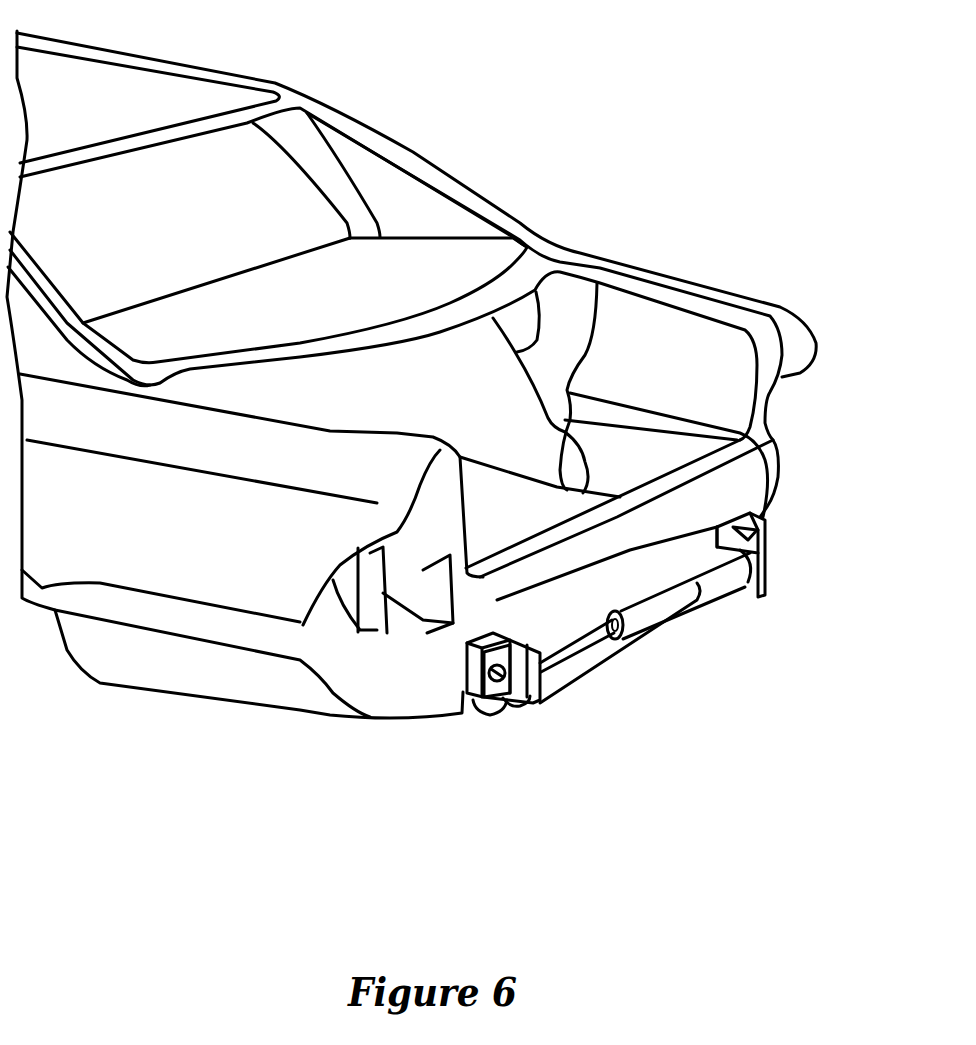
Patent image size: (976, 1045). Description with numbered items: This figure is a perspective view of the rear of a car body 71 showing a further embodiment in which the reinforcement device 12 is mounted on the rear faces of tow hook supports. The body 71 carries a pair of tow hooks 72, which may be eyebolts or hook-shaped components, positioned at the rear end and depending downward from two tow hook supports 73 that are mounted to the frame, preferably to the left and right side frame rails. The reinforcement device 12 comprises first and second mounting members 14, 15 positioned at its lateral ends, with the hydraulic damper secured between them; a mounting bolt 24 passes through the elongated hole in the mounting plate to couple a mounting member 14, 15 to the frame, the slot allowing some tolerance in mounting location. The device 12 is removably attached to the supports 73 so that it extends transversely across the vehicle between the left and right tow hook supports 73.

The reinforcement device 12 is at (653, 625).
The first mounting member 14 is at (540, 683).
The second mounting member 15 is at (770, 573).
The mounting bolt 24 is at (527, 706).
The car body 71 is at (413, 152).
The tow hooks 72 is at (495, 716).
The tow hook supports 73 is at (466, 675).